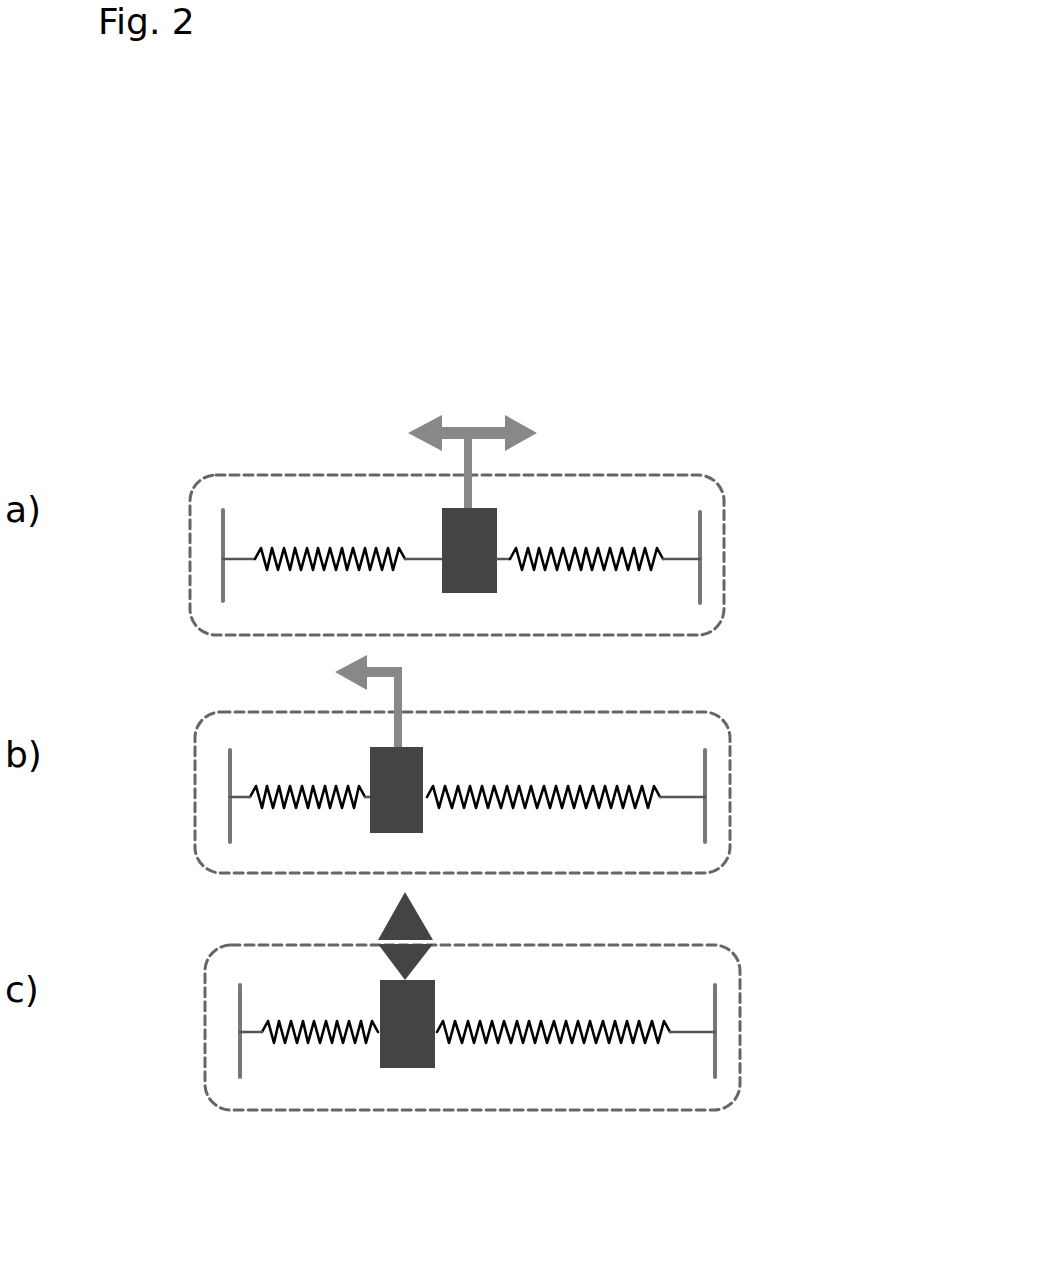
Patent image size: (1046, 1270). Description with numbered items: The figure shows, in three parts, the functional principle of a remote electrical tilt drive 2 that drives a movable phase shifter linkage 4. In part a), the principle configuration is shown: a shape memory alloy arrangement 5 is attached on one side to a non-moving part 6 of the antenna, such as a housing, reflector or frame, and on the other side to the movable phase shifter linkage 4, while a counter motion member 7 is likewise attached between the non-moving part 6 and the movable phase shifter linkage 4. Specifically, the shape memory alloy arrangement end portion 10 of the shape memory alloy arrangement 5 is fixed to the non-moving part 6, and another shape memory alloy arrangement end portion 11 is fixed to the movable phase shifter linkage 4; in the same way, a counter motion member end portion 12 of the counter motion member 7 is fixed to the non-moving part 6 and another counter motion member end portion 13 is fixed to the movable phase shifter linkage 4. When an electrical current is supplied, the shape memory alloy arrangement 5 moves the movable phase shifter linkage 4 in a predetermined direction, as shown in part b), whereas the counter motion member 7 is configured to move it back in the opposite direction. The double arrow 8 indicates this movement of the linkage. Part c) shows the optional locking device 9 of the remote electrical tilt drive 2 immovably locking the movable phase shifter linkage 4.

The remote electrical tilt drive 2 is at (602, 238).
The movable phase shifter linkage 4 is at (450, 538).
The shape memory alloy arrangement 5 is at (283, 553).
The non-moving part 6 is at (703, 530).
The counter motion member 7 is at (608, 547).
The oscillation direction 8 is at (485, 530).
The locking device 9 is at (387, 923).
The shape memory alloy arrangement end portion 10 is at (243, 556).
The shape memory alloy arrangement end portion 11 is at (413, 547).
The counter motion member end portion 12 is at (682, 547).
The counter motion member end portion 13 is at (507, 552).